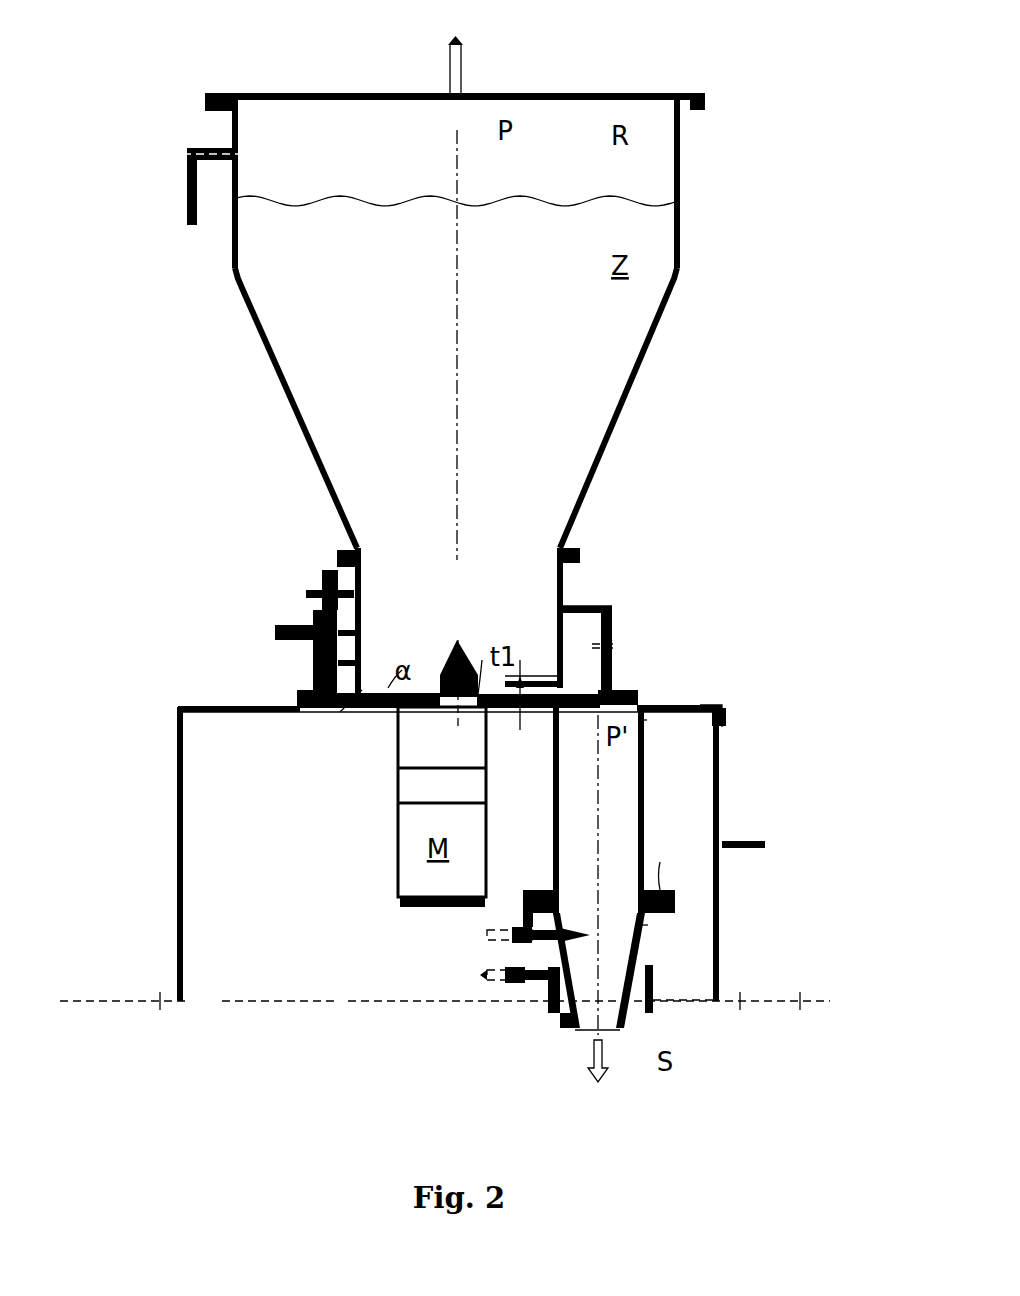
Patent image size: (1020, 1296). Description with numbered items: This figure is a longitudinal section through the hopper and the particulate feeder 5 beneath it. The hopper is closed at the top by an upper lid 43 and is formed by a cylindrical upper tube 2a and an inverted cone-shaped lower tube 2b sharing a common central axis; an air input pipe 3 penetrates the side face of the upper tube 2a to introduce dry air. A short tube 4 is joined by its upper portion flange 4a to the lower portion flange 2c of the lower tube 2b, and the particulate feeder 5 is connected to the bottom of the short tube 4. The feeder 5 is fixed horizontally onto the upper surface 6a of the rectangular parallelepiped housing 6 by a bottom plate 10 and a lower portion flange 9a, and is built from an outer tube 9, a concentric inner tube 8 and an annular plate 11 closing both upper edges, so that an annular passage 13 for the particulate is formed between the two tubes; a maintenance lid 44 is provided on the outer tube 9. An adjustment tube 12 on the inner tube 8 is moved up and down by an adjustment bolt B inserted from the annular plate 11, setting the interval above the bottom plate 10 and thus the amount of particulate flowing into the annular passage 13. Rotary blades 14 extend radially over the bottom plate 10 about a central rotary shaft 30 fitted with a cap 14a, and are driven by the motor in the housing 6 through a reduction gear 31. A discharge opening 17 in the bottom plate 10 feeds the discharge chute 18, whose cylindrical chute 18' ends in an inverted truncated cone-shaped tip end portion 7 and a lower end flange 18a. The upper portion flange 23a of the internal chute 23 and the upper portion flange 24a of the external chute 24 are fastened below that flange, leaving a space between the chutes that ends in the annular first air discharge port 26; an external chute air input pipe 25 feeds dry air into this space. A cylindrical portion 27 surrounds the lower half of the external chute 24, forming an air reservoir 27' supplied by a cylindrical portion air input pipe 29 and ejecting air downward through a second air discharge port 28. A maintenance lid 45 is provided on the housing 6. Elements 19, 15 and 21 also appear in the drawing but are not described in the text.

The upper lid 43 is at (540, 94).
The air input pipe 3 is at (228, 150).
The upper tube 2a is at (683, 160).
The lower tube 2b is at (640, 385).
The lower portion flange 2c is at (574, 550).
The upper portion flange 4a is at (582, 553).
The short tube 4 is at (577, 583).
The annular plate 11 is at (585, 604).
The particulate feeder 5 is at (645, 621).
The annular passage 13 is at (592, 660).
The maintenance lid 44 is at (612, 658).
The inner tube 8 is at (553, 636).
The outer tube 9 is at (605, 693).
The lower portion flange 9a is at (298, 696).
The upper surface 6a is at (705, 700).
The central rotary shaft 30 is at (482, 660).
The cap 14a is at (456, 638).
The rotary blades 14 is at (428, 695).
The adjustment bolt B is at (330, 575).
The bolt head 19 is at (320, 615).
The adjustment tube 12 is at (278, 632).
The spacer 15 is at (315, 682).
The bottom plate 10 is at (348, 712).
The reduction gear 31 is at (478, 748).
The housing 6 is at (727, 763).
The floor line 21 is at (801, 998).
The discharge opening 17 is at (598, 811).
The cylindrical chute 18' is at (674, 748).
The discharge chute 18 is at (731, 778).
The maintenance lid 45 is at (722, 823).
The lower end flange 18a is at (682, 851).
The internal chute 23 is at (640, 926).
The upper portion flange 23a is at (656, 900).
The first air discharge port 26 is at (577, 1040).
The external chute 24 is at (646, 938).
The tip end portion 7 is at (672, 960).
The external chute air input pipe 25 is at (525, 941).
The upper portion flange 24a is at (525, 905).
The cylindrical portion air input pipe 29 is at (522, 981).
The air reservoir 27' is at (501, 1019).
The cylindrical portion 27 is at (689, 1006).
The second air discharge port 28 is at (550, 1030).